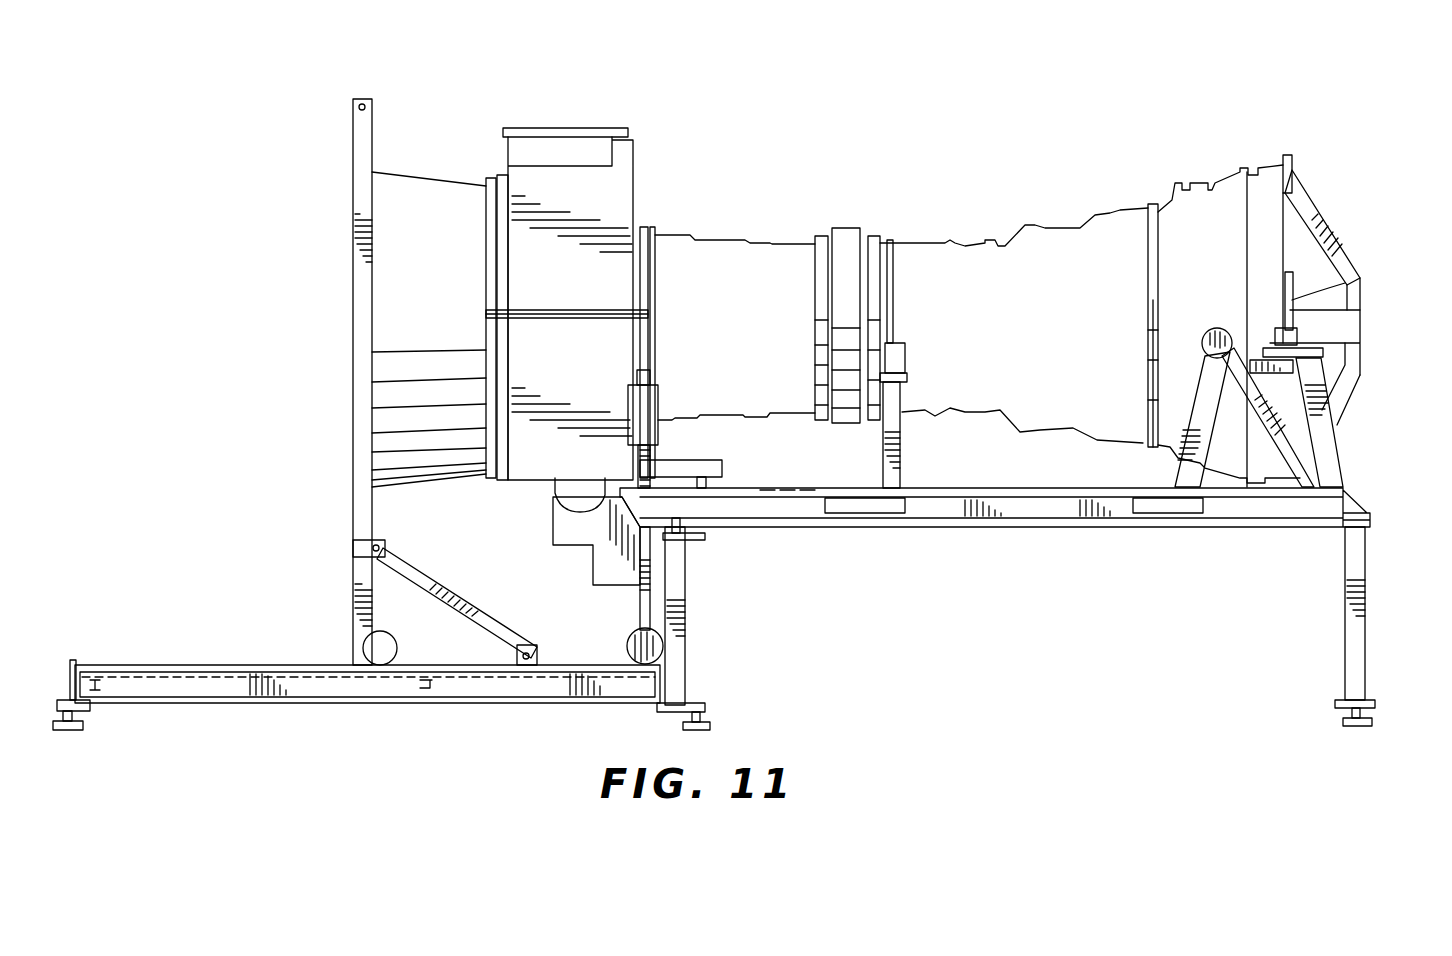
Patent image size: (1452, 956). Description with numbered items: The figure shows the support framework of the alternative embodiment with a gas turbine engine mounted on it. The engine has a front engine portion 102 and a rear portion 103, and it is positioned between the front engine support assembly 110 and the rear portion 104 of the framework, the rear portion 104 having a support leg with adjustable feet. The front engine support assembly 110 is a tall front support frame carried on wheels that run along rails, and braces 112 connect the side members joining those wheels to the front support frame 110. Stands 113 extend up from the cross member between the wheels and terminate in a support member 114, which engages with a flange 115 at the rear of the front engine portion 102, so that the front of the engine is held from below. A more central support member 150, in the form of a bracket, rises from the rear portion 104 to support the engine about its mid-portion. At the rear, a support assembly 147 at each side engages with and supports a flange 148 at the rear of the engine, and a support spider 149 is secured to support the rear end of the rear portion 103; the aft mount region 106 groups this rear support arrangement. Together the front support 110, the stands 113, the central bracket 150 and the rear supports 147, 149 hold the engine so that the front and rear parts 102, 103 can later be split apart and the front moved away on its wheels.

The front engine portion 102 is at (427, 180).
The rear portion of the engine 103 is at (1037, 343).
The rear portion of the support framework 104 is at (1000, 527).
The aft mount assembly 106 is at (1318, 187).
The front engine support assembly 110 is at (352, 413).
The braces 112 is at (437, 580).
The stands 113 is at (637, 612).
The support member 114 is at (657, 408).
The flange 115 is at (650, 378).
The support assembly 147 is at (1330, 452).
The flange 148 is at (1360, 285).
The support spider 149 is at (1335, 245).
The central support member 150 is at (904, 457).